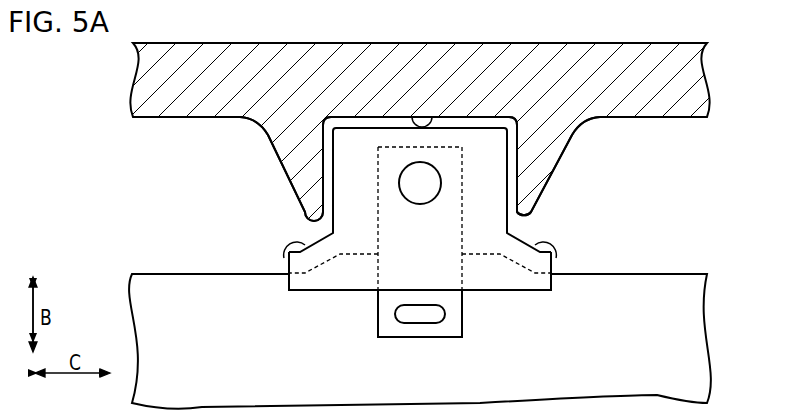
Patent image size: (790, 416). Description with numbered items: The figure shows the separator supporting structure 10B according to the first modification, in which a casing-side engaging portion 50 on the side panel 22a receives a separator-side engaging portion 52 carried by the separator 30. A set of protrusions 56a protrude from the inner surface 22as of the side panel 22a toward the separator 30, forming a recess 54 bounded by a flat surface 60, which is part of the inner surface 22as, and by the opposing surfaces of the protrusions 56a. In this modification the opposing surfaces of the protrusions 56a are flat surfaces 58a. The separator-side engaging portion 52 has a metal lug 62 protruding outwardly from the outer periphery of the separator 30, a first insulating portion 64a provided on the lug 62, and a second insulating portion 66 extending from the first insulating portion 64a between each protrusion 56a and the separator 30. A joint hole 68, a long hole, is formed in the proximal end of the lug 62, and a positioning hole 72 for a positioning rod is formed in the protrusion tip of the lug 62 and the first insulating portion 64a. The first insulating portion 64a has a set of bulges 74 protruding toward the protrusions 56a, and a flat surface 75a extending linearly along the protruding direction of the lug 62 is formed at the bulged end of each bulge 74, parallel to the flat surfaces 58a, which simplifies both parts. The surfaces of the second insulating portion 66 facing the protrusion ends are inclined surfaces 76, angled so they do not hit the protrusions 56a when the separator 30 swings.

The side panel 22a is at (605, 55).
The inner surface of the side panel 22as is at (680, 118).
The recess 54 is at (368, 125).
The flat surface 60 is at (424, 117).
The first insulating portion 64a is at (480, 140).
The flat surface 75a is at (332, 156).
The bulge 74 is at (350, 167).
The protrusion 56a is at (303, 180).
The flat surface 58a is at (323, 178).
The casing-side engaging portion 50 is at (419, 194).
The separator-side engaging portion 52 is at (514, 229).
The separator supporting structure 10B is at (439, 194).
The positioning hole 72 is at (420, 195).
The inclined surface 76 is at (290, 247).
The second insulating portion 66 is at (306, 283).
The joint hole 68 is at (412, 317).
The lug 62 is at (448, 328).
The separator 30 is at (692, 319).